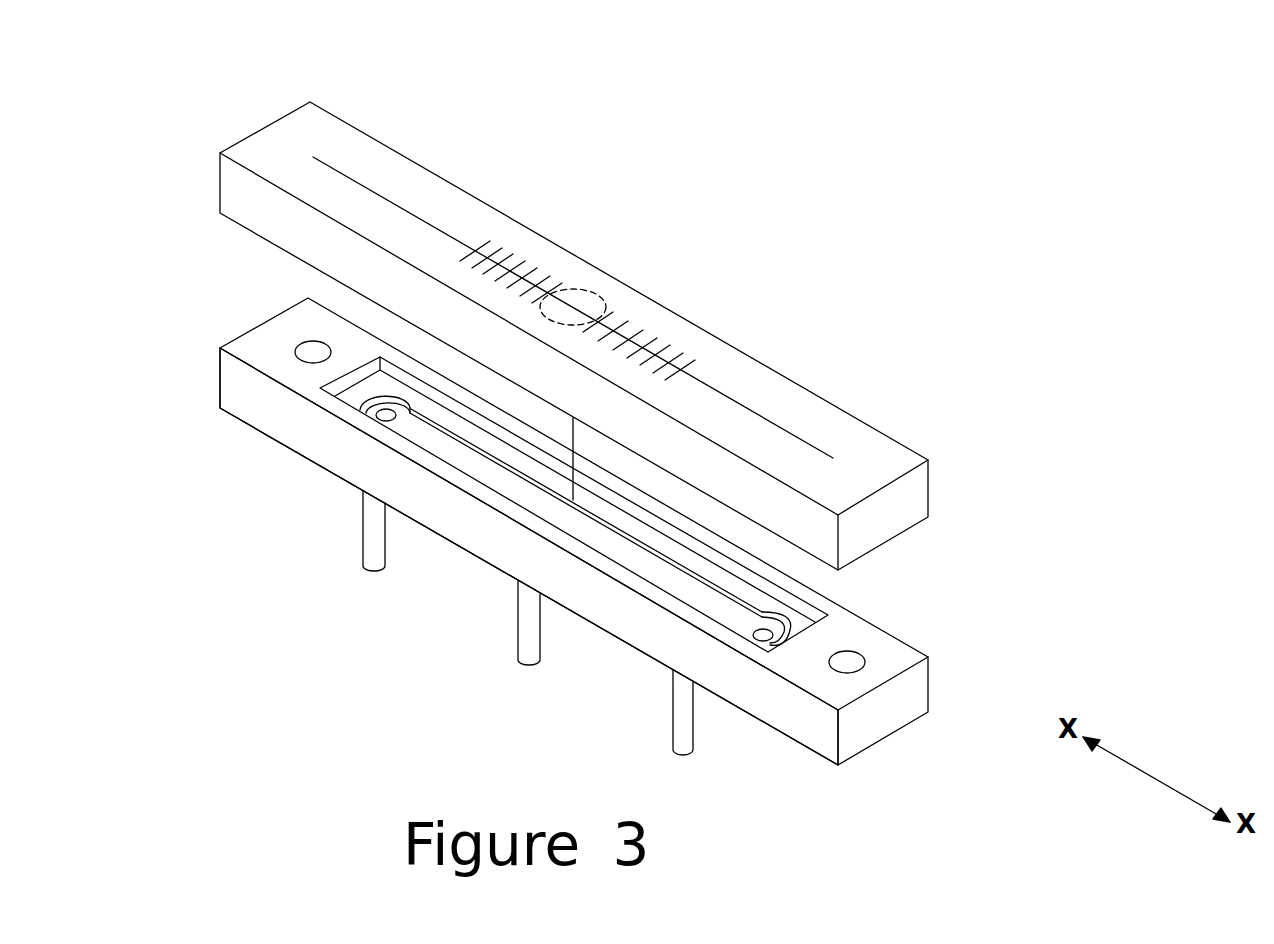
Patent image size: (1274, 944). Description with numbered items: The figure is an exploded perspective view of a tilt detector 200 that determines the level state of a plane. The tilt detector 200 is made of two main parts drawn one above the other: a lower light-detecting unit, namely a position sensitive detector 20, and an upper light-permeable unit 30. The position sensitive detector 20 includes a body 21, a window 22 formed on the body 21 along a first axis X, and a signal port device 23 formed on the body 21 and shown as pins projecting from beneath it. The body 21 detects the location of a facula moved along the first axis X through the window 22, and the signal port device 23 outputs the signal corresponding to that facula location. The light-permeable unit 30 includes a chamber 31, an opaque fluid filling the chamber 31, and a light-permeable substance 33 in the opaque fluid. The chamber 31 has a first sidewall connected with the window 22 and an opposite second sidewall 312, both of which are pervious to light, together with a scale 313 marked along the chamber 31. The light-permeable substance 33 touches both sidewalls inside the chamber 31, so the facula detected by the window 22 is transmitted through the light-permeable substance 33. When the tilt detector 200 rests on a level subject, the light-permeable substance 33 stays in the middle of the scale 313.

The tilt detector 200 is at (810, 217).
The position sensitive detector 20 is at (897, 637).
The body 21 is at (787, 718).
The window 22 is at (743, 620).
The signal port device 23 is at (668, 758).
The light-permeable unit 30 is at (467, 193).
The chamber 31 is at (345, 143).
The second sidewall 312 is at (532, 240).
The scale 313 is at (547, 275).
The light-permeable substance 33 is at (593, 290).